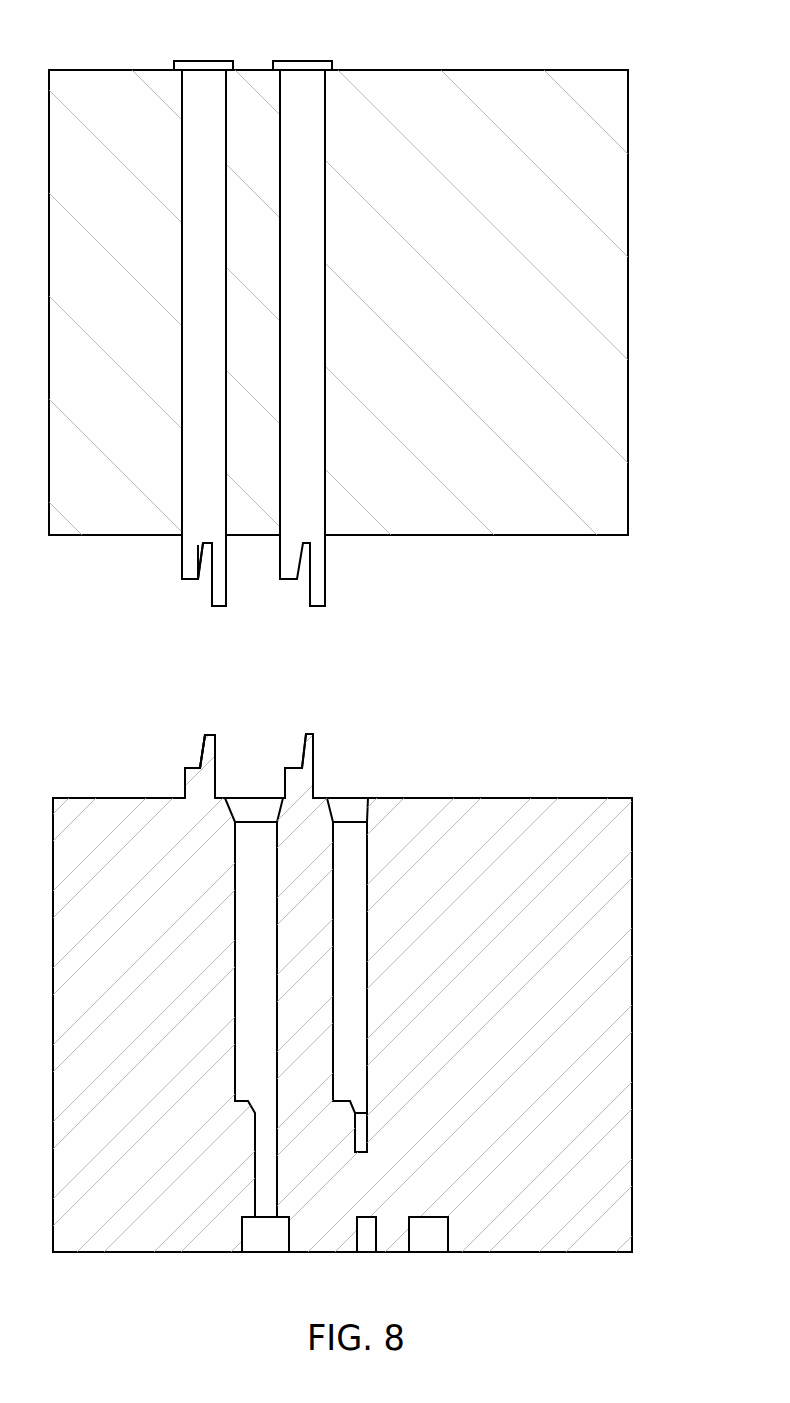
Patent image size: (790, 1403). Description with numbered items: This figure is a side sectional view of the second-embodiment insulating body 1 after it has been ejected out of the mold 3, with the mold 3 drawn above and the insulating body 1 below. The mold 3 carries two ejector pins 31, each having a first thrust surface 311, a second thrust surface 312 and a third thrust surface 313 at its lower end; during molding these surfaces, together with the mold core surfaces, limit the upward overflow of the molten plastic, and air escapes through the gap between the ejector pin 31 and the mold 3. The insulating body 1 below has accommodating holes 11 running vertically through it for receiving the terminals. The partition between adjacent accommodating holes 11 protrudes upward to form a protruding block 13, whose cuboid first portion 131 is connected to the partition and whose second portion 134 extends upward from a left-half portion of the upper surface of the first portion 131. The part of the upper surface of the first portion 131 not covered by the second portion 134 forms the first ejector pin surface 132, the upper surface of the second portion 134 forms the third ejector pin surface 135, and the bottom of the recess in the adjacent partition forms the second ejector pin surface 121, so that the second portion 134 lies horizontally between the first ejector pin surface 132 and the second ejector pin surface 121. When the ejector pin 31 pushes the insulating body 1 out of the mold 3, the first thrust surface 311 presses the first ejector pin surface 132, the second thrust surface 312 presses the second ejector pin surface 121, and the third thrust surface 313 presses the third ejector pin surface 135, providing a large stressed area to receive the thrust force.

The insulating body 1 is at (632, 1075).
The accommodating hole 11 is at (348, 838).
The second ejector pin surface 121 is at (309, 770).
The protruding block 13 is at (285, 702).
The first portion 131 is at (216, 775).
The first ejector pin surface 132 is at (192, 768).
The second portion 134 is at (216, 755).
The third ejector pin surface 135 is at (207, 733).
The mold 3 is at (620, 69).
The ejector pin 31 is at (194, 85).
The first thrust surface 311 is at (193, 580).
The second thrust surface 312 is at (218, 608).
The third thrust surface 313 is at (206, 545).